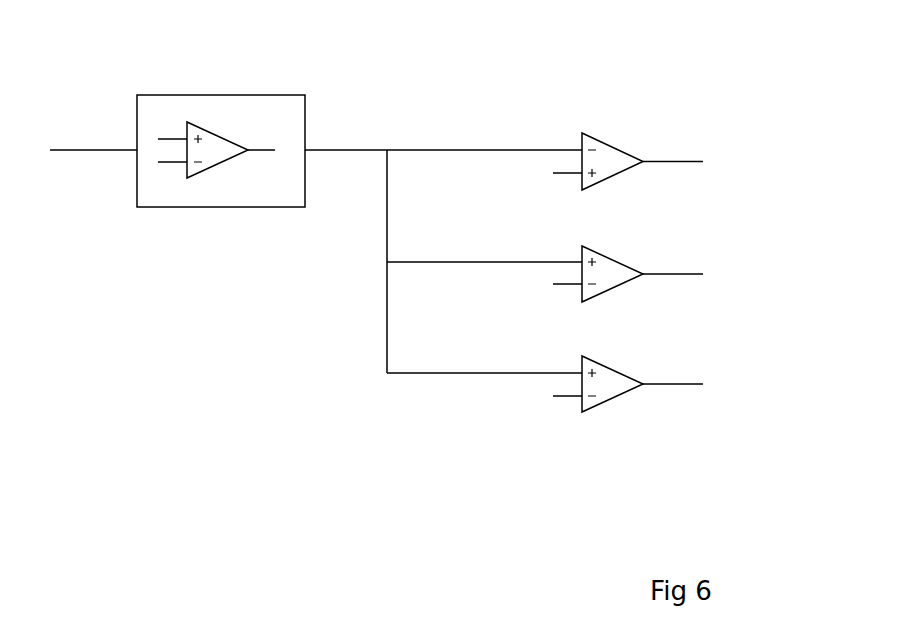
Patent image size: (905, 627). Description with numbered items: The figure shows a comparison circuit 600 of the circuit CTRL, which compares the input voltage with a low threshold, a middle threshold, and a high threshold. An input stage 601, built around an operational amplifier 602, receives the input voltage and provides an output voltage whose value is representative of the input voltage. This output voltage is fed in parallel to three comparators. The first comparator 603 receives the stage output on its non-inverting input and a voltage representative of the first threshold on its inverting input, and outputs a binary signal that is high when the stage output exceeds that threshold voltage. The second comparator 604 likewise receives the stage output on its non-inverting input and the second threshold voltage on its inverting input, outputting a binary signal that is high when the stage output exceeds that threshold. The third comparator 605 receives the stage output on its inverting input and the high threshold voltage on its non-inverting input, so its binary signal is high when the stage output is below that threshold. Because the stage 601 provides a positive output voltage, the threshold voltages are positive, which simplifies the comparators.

The comparison circuit 600 is at (720, 103).
The input stage 601 is at (248, 95).
The operational amplifier 602 is at (221, 160).
The comparator 603 is at (612, 384).
The comparator 604 is at (613, 273).
The comparator 605 is at (612, 158).